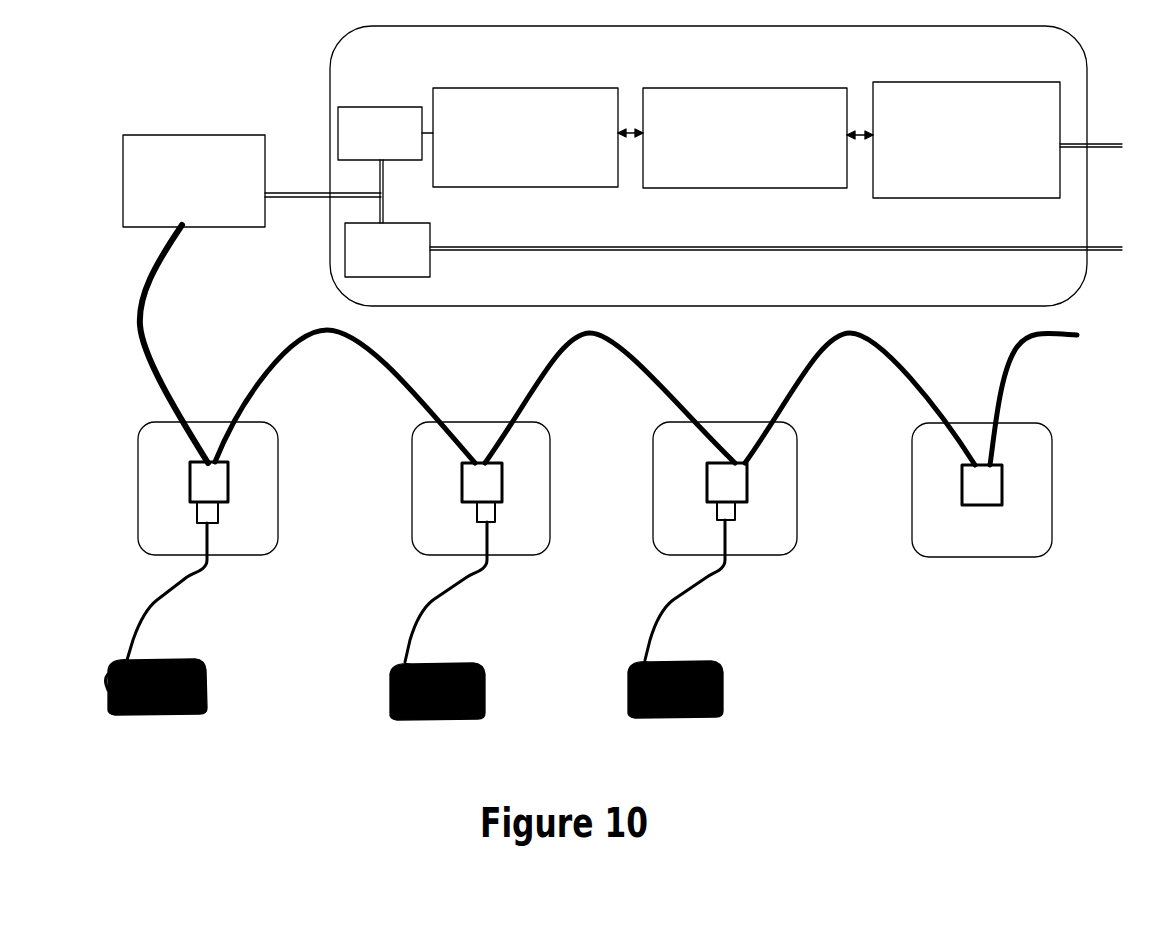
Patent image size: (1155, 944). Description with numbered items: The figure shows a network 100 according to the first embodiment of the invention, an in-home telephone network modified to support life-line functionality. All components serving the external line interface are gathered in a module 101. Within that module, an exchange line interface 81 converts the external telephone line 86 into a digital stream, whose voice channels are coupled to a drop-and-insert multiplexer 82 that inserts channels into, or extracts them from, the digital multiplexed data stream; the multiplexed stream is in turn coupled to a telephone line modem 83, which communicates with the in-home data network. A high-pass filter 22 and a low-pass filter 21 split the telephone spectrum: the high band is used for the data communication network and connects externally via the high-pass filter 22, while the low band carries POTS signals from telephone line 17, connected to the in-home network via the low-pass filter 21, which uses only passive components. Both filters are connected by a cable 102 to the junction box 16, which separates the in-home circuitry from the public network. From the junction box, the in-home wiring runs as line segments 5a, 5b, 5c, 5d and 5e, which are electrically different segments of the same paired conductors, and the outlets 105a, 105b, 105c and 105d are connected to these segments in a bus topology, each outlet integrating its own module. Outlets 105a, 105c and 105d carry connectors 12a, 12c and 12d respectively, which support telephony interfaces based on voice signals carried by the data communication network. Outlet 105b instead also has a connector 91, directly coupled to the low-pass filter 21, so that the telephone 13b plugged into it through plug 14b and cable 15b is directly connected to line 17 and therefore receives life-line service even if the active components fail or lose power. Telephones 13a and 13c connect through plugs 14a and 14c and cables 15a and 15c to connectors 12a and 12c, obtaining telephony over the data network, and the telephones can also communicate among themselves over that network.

The network 100 is at (897, 640).
The module 101 is at (337, 293).
The cable 102 is at (277, 195).
The junction box 16 is at (187, 135).
The high-pass filter 22 is at (373, 110).
The low-pass filter 21 is at (422, 277).
The telephone line modem 83 is at (508, 88).
The drop-and-insert multiplexer 82 is at (708, 88).
The exchange line interface 81 is at (930, 82).
The external telephone line 86 is at (1093, 152).
The telephone line 17 is at (1093, 258).
The line segment 5a is at (160, 395).
The line segment 5b is at (247, 397).
The line segment 5c is at (520, 397).
The line segment 5d is at (777, 397).
The line segment 5e is at (1002, 388).
The outlet 105a is at (280, 460).
The outlet 105b is at (552, 453).
The outlet 105c is at (797, 457).
The outlet 105d is at (1052, 458).
The connector 12a is at (242, 477).
The connector 91 is at (507, 482).
The connector 12c is at (755, 477).
The connector 12d is at (1008, 480).
The plug 14a is at (190, 518).
The plug 14b is at (477, 520).
The plug 14c is at (717, 518).
The cable 15a is at (152, 603).
The cable 15b is at (410, 628).
The cable 15c is at (650, 628).
The telephone 13a is at (237, 703).
The telephone 13b is at (513, 703).
The telephone 13c is at (755, 705).